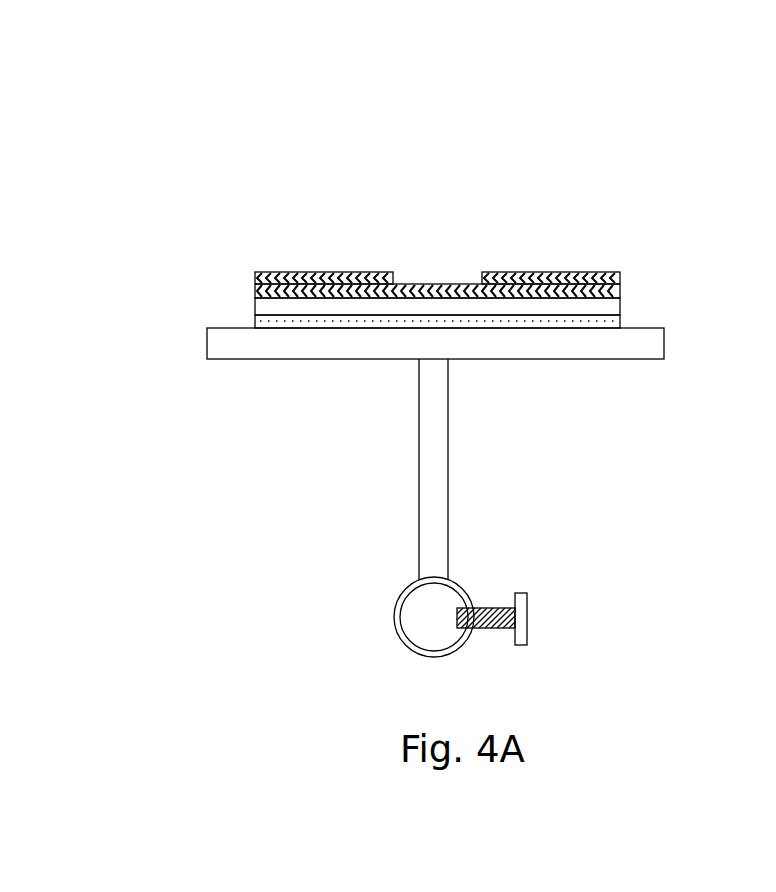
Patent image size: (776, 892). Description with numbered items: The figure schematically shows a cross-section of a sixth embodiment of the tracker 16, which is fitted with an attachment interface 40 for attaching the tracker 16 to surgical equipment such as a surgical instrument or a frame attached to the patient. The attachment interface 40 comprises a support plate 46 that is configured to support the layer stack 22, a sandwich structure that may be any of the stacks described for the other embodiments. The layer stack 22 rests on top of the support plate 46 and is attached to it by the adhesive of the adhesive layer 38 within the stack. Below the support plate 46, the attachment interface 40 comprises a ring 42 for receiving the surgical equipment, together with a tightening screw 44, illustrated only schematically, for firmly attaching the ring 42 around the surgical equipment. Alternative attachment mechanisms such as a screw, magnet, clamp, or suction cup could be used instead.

The tracker 16 is at (276, 162).
The layer stack 22 is at (638, 250).
The adhesive layer 38 is at (607, 322).
The attachment interface 40 is at (288, 443).
The ring 42 is at (395, 610).
The tightening screw 44 is at (527, 600).
The support plate 46 is at (222, 345).